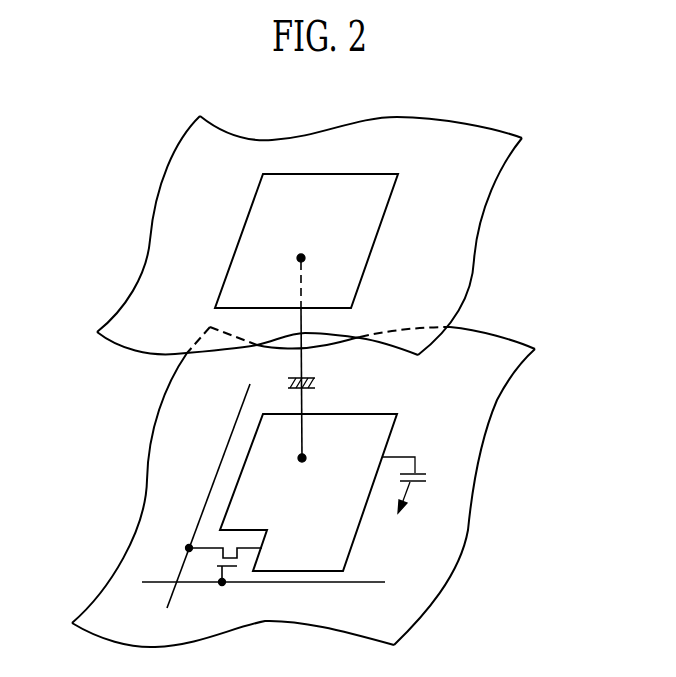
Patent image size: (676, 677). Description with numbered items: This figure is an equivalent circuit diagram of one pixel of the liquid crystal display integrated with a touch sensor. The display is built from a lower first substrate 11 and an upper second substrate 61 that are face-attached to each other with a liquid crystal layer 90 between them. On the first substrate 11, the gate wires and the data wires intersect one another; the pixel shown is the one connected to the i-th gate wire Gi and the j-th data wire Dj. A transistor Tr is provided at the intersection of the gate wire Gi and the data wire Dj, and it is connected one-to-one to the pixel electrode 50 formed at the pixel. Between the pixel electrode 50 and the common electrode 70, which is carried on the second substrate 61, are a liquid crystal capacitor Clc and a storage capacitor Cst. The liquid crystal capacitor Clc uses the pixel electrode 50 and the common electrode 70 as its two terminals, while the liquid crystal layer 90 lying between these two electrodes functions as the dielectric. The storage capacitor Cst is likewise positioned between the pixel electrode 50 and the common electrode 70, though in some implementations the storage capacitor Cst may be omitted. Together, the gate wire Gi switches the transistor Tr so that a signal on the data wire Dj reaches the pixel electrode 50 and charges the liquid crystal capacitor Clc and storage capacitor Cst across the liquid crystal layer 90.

The first substrate 11 is at (490, 412).
The pixel electrode 50 is at (358, 527).
The second substrate 61 is at (473, 287).
The common electrode 70 is at (395, 188).
The liquid crystal layer 90 is at (130, 388).
The j-th data wire Dj is at (212, 483).
The i-th gate wire Gi is at (263, 567).
The transistor Tr is at (224, 581).
The liquid crystal capacitor Clc is at (321, 385).
The storage capacitor Cst is at (418, 485).